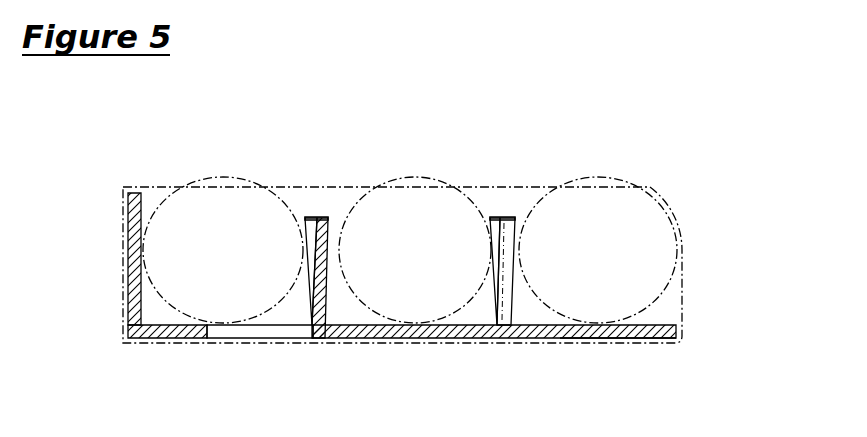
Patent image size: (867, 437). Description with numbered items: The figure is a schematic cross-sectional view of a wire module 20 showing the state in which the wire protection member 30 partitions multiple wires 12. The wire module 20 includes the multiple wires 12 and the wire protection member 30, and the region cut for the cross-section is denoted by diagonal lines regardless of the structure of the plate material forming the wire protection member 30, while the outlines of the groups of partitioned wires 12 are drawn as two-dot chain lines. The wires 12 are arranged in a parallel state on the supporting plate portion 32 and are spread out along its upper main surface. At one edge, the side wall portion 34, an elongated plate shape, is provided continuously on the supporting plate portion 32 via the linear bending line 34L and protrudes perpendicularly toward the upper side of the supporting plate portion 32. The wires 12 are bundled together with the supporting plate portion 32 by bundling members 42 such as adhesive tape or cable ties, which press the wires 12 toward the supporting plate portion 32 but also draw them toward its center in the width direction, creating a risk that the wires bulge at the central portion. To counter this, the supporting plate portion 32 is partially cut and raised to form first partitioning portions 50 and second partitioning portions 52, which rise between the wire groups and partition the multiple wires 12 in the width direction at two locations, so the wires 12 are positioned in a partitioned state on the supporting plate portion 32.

The wire module 20 is at (184, 151).
The wires 12 is at (278, 198).
The wire protection member 30 is at (425, 340).
The supporting plate portion 32 is at (615, 339).
The side wall portion 34 is at (128, 233).
The bending line 34L is at (125, 339).
The bundling members 42 is at (675, 216).
The first partitioning portions 50 is at (325, 217).
The second partitioning portions 52 is at (313, 217).